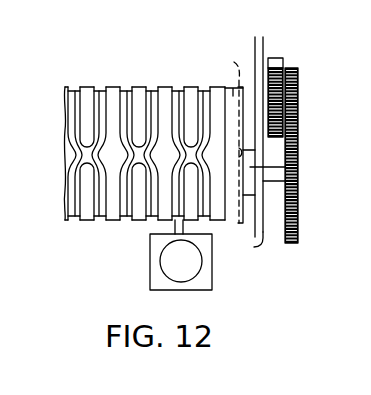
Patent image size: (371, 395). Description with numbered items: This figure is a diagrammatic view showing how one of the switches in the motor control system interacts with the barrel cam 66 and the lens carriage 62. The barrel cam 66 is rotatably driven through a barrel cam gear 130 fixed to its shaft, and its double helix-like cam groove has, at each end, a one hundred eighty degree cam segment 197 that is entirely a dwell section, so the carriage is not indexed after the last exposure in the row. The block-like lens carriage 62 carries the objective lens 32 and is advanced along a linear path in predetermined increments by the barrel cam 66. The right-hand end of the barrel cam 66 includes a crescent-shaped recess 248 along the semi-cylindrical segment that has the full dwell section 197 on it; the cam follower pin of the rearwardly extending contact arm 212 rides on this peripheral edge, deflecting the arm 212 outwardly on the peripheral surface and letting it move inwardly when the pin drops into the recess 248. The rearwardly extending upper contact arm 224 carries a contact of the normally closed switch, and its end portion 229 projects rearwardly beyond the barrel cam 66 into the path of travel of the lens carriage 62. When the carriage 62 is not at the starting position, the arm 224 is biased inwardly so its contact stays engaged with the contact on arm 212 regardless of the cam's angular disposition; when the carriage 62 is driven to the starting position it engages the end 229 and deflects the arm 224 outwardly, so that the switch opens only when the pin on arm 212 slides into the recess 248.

The barrel cam 66 is at (114, 87).
The cam segment 197 is at (233, 88).
The crescent-shaped recess 248 is at (223, 134).
The contact arm 212 is at (254, 52).
The barrel cam gear 130 is at (298, 77).
The upper contact arm 224 is at (298, 182).
The free end 229 is at (263, 240).
The lens carriage 62 is at (212, 262).
The objective lens 32 is at (168, 255).